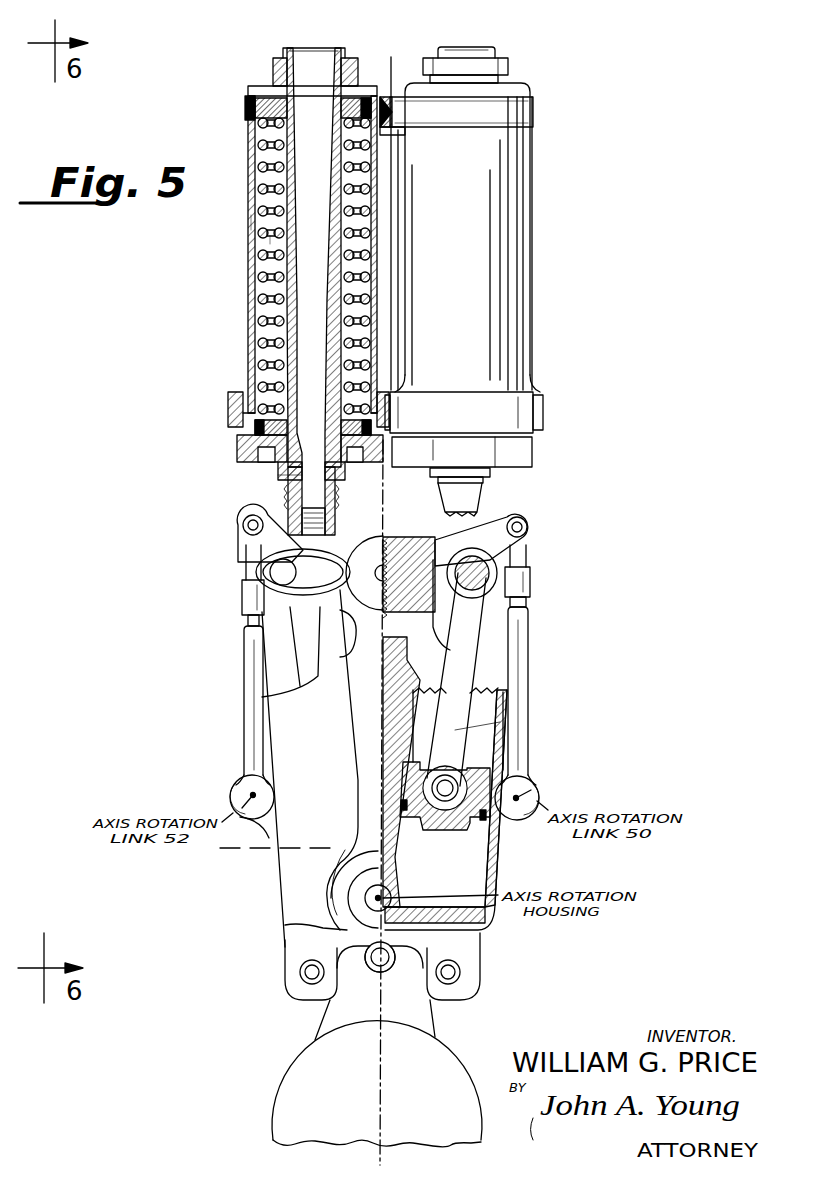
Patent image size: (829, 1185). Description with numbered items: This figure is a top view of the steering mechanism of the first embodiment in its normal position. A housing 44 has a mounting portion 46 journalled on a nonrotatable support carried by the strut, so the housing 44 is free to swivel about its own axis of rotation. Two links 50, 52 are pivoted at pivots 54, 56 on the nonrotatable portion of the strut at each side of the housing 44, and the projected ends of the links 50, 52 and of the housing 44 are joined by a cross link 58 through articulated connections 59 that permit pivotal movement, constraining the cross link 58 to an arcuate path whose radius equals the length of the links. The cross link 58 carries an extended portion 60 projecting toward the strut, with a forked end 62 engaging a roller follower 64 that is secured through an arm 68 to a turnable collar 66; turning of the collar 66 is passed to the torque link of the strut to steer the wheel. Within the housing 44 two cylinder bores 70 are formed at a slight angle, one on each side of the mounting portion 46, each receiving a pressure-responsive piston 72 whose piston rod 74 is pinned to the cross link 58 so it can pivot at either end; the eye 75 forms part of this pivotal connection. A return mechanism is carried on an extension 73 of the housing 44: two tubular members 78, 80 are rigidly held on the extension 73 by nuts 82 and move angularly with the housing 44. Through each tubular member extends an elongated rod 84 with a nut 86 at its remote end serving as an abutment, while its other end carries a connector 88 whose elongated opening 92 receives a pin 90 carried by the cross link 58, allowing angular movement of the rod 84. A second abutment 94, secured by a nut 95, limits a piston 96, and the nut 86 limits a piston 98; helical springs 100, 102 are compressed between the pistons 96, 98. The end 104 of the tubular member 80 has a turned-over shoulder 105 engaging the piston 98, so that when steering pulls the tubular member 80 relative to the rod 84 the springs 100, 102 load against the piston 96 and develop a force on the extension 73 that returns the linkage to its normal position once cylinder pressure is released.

The housing 44 is at (292, 870).
The mounting portion 46 is at (261, 854).
The link 50 is at (521, 660).
The link 52 is at (250, 672).
The pivot 54 is at (538, 788).
The pivot 56 is at (230, 796).
The cross link 58 is at (458, 536).
The articulated connections 59 is at (243, 530).
The extended portion 60 is at (360, 693).
The forked end 62 is at (363, 902).
The roller follower 64 is at (377, 890).
The turnable collar 66 is at (288, 1096).
The arm 68 is at (343, 1000).
The cylinder bore 70 is at (480, 859).
The piston 72 is at (497, 775).
The extension 73 is at (352, 486).
The piston rod 74 is at (460, 732).
The pivot eye 75 is at (478, 578).
The tubular member 78 is at (527, 305).
The tubular member 80 is at (250, 275).
The nut 82 is at (235, 457).
The elongated rod 84 is at (252, 135).
The nut 86 is at (285, 60).
The connector 88 is at (250, 580).
The pin 90 is at (267, 592).
The elongated opening 92 is at (265, 558).
The second abutment 94 is at (291, 438).
The nut 95 is at (280, 472).
The piston 96 is at (262, 420).
The piston 98 is at (250, 100).
The helical spring 100 is at (252, 222).
The helical spring 102 is at (272, 240).
The end of tubular member 104 is at (262, 83).
The shoulder 105 is at (395, 130).